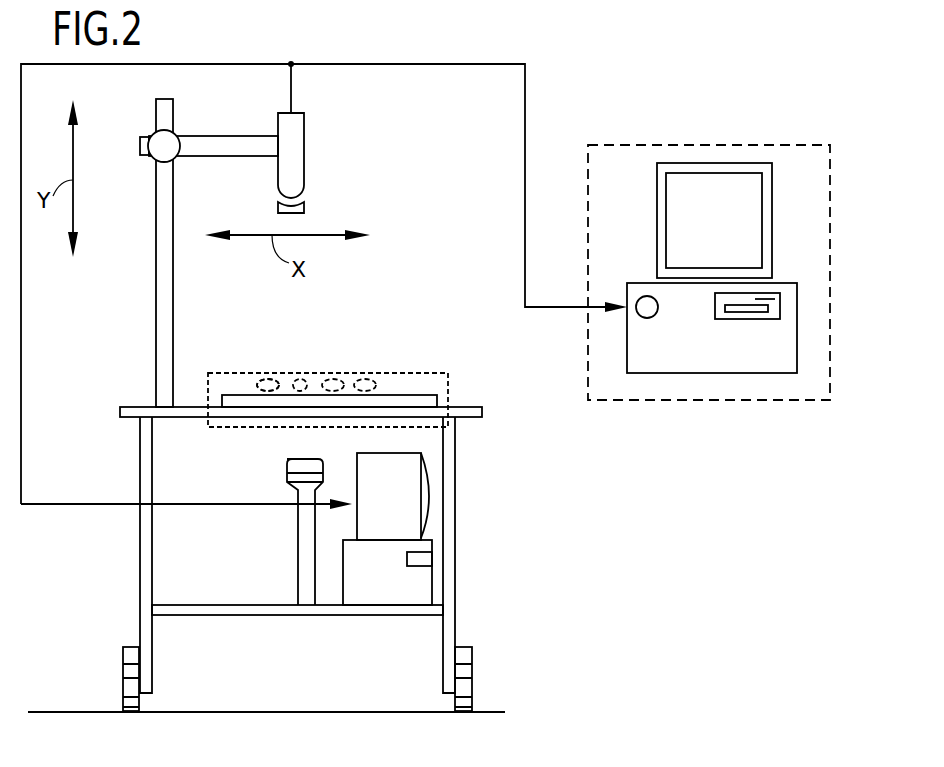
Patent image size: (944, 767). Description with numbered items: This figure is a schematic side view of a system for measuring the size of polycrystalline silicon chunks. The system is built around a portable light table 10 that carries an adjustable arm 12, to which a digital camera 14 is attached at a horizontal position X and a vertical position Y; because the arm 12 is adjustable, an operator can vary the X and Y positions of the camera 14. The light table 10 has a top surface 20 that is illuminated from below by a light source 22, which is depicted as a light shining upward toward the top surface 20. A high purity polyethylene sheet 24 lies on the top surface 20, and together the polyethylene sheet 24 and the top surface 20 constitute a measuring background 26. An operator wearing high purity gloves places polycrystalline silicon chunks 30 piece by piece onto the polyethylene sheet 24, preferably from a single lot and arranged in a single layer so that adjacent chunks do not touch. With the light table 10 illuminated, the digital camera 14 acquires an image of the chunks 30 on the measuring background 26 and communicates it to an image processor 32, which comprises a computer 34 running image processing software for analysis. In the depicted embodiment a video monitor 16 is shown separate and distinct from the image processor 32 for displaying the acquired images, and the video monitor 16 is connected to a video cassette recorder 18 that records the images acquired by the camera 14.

The portable light table 10 is at (633, 86).
The adjustable arm 12 is at (140, 143).
The digital camera 14 is at (303, 165).
The video monitor 16 is at (430, 505).
The video cassette recorder 18 is at (423, 560).
The top surface 20 is at (462, 406).
The light source 22 is at (288, 472).
The high purity polyethylene sheet 24 is at (390, 395).
The measuring background 26 is at (292, 373).
The polycrystalline silicon chunks 30 is at (257, 383).
The image processor 32 is at (665, 143).
The computer 34 is at (782, 283).